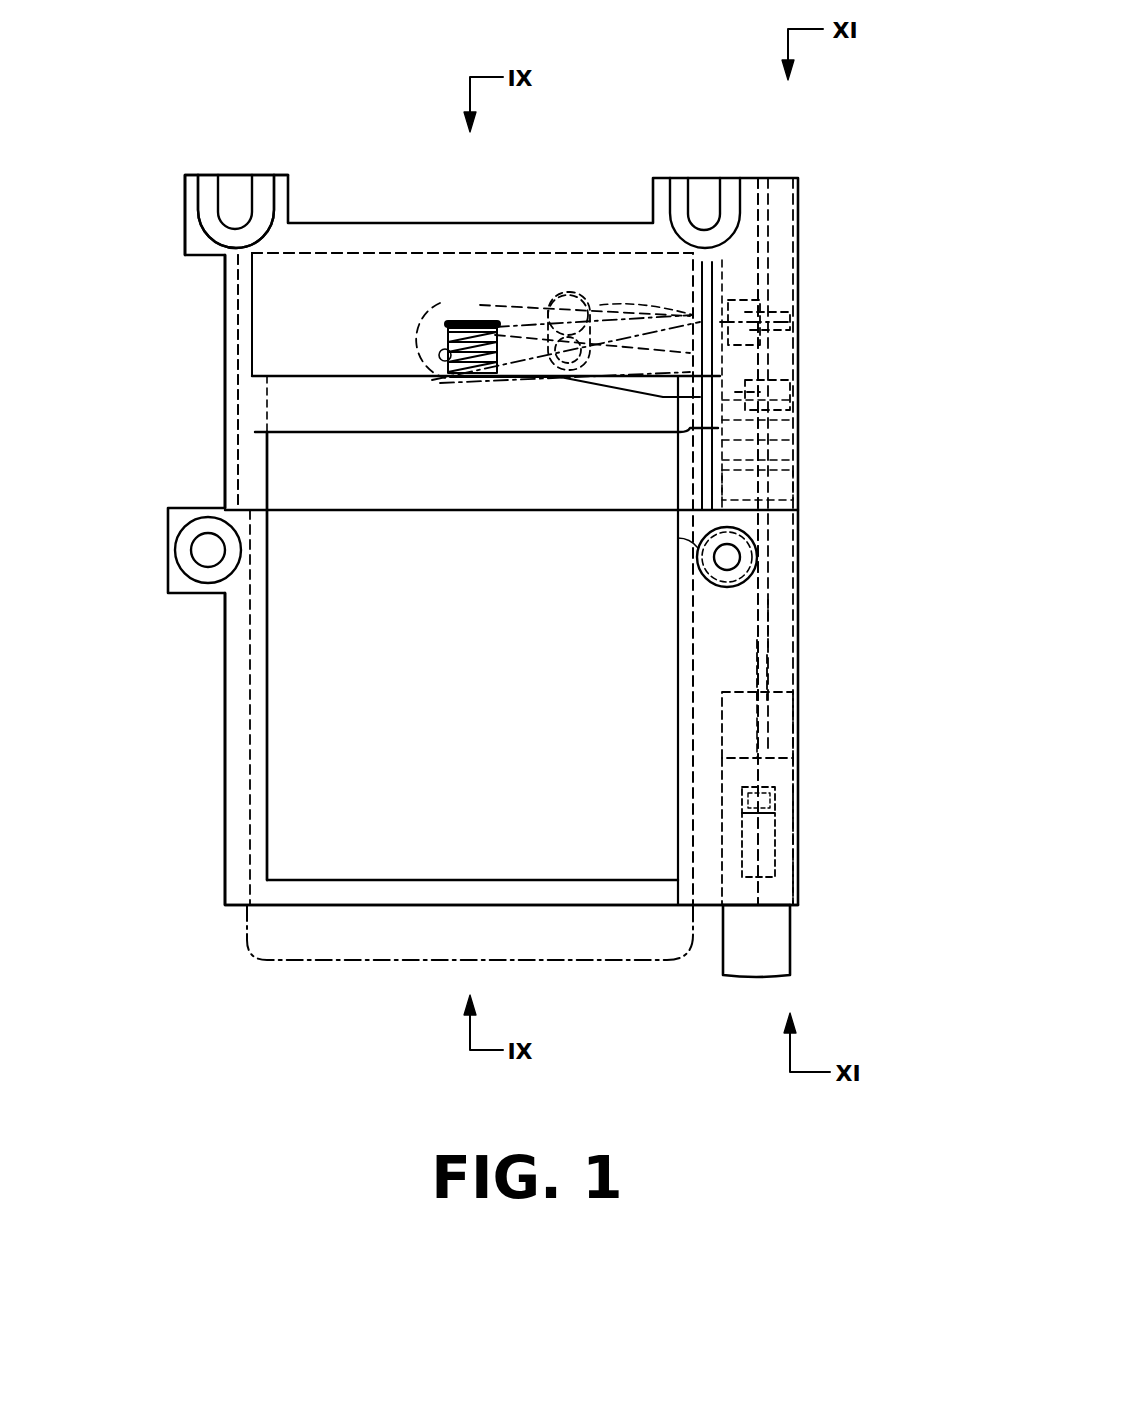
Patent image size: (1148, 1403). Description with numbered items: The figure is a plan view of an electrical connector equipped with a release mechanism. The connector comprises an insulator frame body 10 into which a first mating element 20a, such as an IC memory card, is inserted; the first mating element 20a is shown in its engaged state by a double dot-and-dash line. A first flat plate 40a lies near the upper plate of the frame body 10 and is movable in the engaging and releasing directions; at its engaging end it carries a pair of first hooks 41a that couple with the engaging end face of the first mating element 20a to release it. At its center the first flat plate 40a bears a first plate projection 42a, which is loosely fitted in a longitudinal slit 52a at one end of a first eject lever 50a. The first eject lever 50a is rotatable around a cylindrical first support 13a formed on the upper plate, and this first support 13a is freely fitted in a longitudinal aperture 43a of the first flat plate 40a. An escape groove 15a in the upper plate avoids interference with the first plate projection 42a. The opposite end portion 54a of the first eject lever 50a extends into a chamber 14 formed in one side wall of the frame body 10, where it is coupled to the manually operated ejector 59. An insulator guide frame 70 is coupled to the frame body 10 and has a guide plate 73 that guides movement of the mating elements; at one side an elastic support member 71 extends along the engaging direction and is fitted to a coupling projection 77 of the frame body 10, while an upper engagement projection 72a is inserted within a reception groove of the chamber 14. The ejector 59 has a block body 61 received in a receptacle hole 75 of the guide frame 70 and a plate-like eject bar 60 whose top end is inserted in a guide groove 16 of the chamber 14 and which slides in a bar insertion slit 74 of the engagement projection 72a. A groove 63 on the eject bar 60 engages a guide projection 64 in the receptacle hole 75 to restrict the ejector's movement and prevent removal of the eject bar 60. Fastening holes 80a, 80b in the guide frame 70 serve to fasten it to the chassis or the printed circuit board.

The frame body 10 is at (195, 175).
The first hooks 41a is at (275, 248).
The first flat plate 40a is at (333, 290).
The first eject lever 50a is at (433, 313).
The longitudinal slit 52a is at (455, 320).
The first plate projection 42a is at (476, 332).
The escape groove 15a is at (512, 327).
The first support 13a is at (568, 300).
The longitudinal aperture 43a is at (590, 307).
The guide groove 16 is at (760, 230).
The coupling projection 77 is at (238, 300).
The elastic support member 71 is at (228, 360).
The opposite end portion 54a is at (780, 322).
The chamber 14 is at (795, 400).
The upper engagement projection 72a is at (785, 490).
The fastening hole 80a is at (210, 540).
The fastening hole 80b is at (740, 553).
The bar insertion slit 74 is at (773, 630).
The eject bar 60 is at (770, 665).
The receptacle hole 75 is at (785, 728).
The guide projection 64 is at (775, 797).
The groove 63 is at (775, 845).
The ejector 59 is at (790, 910).
The block body 61 is at (775, 955).
The guide plate 73 is at (290, 780).
The guide frame 70 is at (238, 846).
The first mating element 20a is at (625, 962).